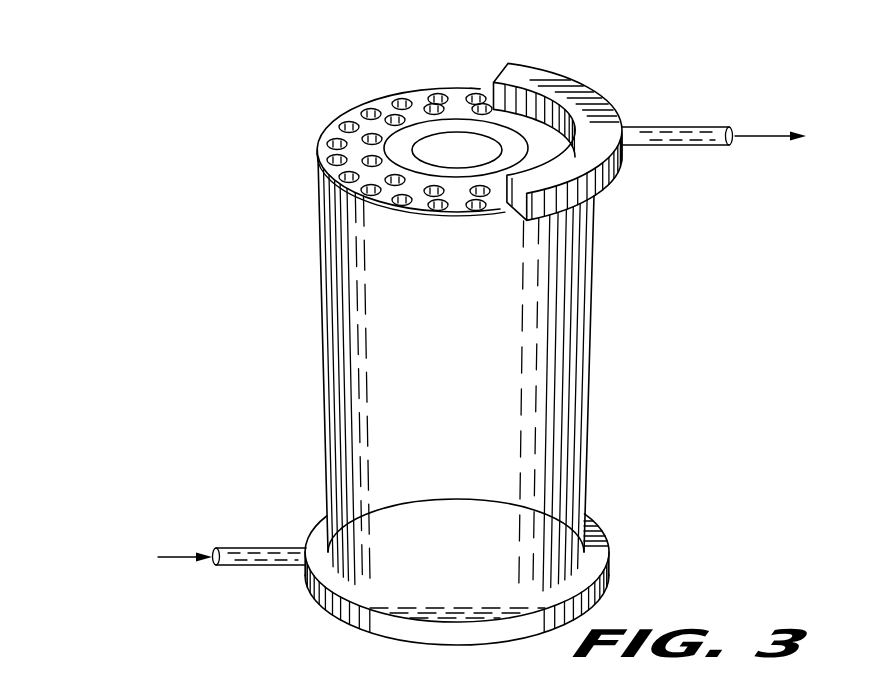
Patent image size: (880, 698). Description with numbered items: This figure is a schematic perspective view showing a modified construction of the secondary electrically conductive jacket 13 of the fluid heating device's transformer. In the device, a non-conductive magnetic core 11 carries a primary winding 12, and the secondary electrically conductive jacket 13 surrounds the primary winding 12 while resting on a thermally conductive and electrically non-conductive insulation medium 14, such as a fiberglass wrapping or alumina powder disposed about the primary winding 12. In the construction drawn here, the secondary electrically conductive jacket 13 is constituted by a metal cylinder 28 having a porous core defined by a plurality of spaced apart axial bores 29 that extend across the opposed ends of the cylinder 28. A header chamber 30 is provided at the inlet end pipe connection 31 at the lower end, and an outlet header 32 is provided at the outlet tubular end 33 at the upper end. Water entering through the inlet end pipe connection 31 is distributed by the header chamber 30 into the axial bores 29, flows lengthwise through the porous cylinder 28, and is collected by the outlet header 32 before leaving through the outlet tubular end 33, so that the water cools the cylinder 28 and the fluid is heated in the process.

The non-conductive magnetic core 11 is at (480, 142).
The primary winding 12 is at (392, 148).
The secondary electrically conductive jacket 13 is at (578, 302).
The insulation medium 14 is at (400, 130).
The metal cylinder 28 is at (456, 80).
The axial bores 29 is at (367, 126).
The header chamber 30 is at (603, 585).
The inlet end pipe connection 31 is at (255, 557).
The outlet header 32 is at (592, 98).
The outlet tubular end 33 is at (673, 133).